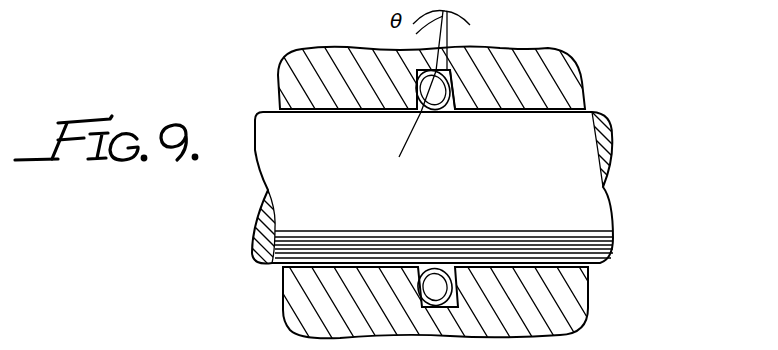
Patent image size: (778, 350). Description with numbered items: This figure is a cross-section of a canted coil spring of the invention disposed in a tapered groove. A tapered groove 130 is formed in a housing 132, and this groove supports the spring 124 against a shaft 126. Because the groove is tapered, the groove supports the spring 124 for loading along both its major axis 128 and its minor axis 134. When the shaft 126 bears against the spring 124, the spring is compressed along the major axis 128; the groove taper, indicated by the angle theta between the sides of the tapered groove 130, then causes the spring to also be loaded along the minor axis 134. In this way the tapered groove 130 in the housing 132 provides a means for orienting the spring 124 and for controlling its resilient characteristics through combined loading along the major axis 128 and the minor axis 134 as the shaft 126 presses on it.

The spring 124 is at (417, 90).
The shaft 126 is at (598, 217).
The major axis 128 is at (403, 139).
The tapered groove 130 is at (445, 88).
The housing 132 is at (570, 77).
The minor axis 134 is at (449, 104).